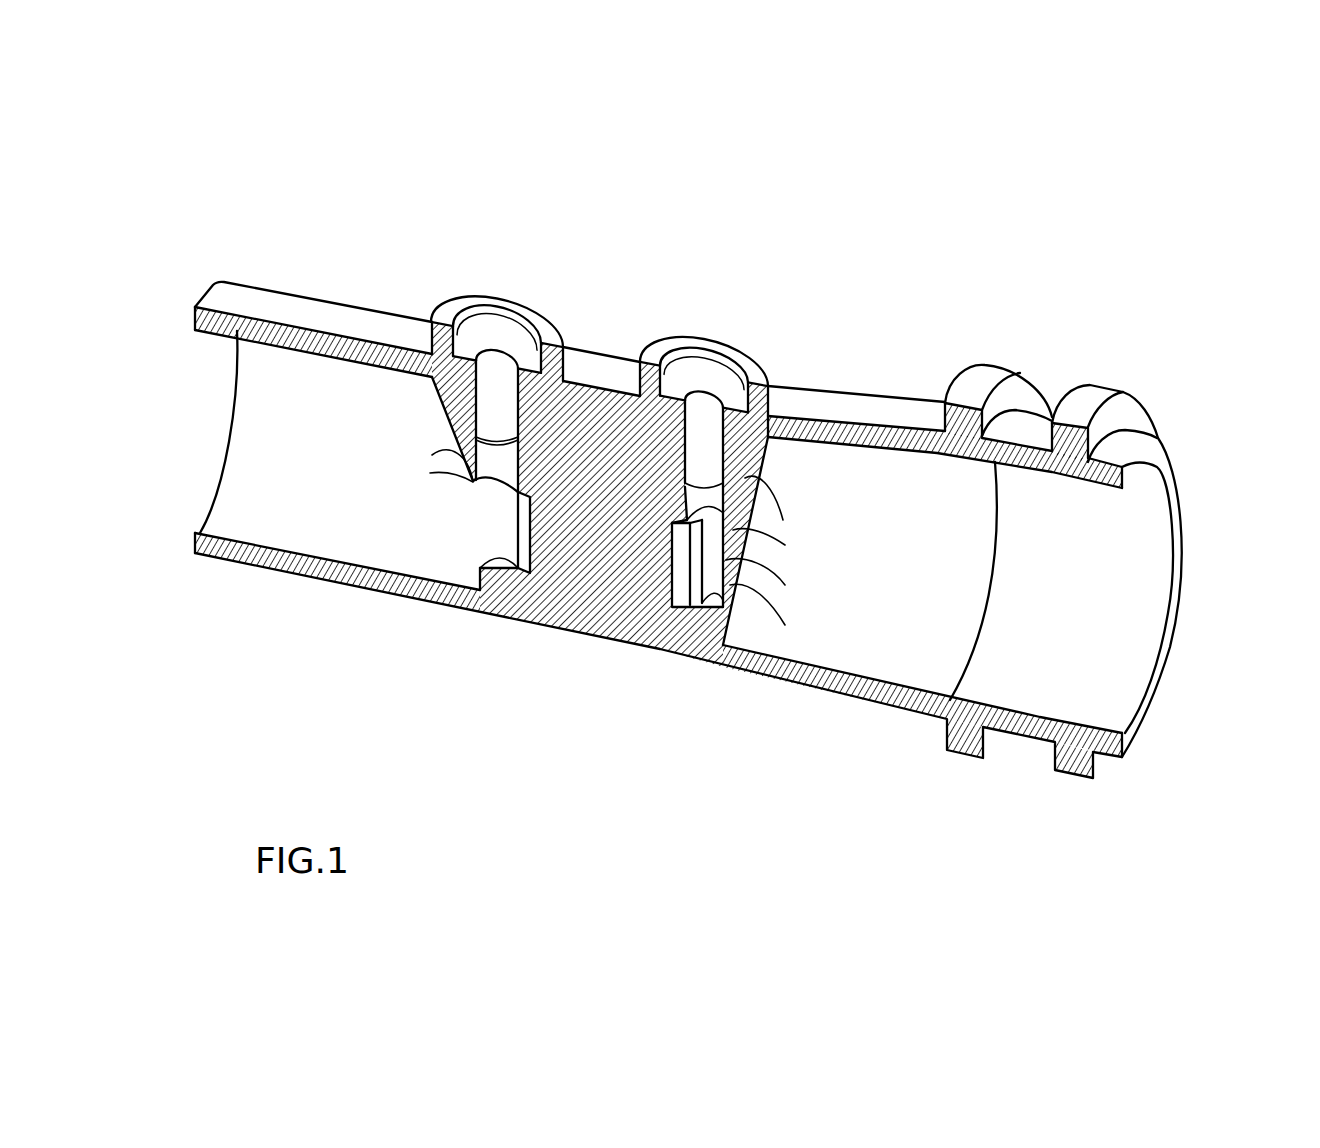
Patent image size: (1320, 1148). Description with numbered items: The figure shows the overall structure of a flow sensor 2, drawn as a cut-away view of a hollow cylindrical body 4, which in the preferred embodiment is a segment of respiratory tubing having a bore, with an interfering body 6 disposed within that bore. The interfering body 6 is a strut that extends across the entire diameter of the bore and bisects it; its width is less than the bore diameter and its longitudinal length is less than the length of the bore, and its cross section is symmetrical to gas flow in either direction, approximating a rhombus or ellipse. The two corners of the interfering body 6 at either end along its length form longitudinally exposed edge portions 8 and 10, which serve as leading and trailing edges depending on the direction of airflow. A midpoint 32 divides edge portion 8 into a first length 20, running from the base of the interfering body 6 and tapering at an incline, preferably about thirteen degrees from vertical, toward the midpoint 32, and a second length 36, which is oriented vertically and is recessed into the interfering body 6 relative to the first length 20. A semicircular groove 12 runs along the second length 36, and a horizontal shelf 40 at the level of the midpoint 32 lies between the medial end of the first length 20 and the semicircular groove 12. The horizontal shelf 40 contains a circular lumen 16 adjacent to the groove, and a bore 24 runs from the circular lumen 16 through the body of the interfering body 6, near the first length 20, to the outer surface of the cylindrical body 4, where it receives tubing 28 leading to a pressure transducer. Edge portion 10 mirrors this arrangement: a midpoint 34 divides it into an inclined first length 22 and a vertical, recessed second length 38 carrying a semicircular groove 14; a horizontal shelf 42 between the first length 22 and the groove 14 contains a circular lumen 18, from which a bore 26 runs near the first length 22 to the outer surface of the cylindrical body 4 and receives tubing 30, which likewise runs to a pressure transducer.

The flow sensor 2 is at (342, 604).
The hollow cylindrical body 4 is at (793, 680).
The interfering body 6 is at (583, 641).
The edge portion 8 is at (944, 508).
The edge portion 10 is at (340, 411).
The semicircular groove 12 is at (700, 590).
The semicircular groove 14 is at (517, 537).
The circular lumen 16 is at (757, 470).
The circular lumen 18 is at (485, 447).
The first length 20 is at (763, 457).
The first length 22 is at (440, 398).
The bore 24 is at (708, 422).
The bore 26 is at (495, 383).
The tubing 28 is at (725, 343).
The tubing 30 is at (510, 300).
The midpoint 32 is at (735, 530).
The midpoint 34 is at (474, 486).
The second length 36 is at (725, 573).
The second length 38 is at (517, 519).
The horizontal shelf 40 is at (706, 559).
The horizontal shelf 42 is at (476, 477).